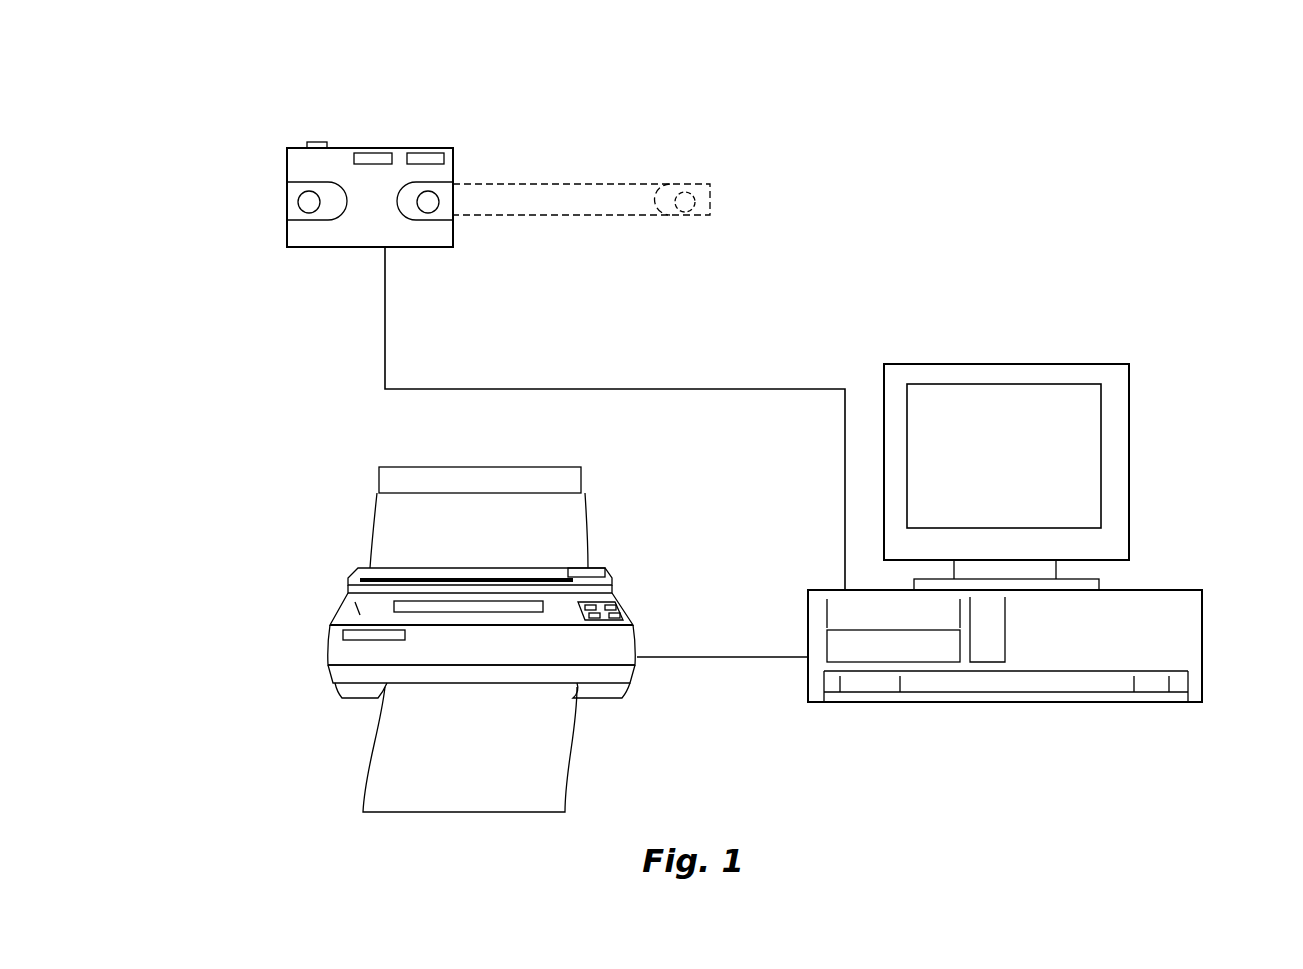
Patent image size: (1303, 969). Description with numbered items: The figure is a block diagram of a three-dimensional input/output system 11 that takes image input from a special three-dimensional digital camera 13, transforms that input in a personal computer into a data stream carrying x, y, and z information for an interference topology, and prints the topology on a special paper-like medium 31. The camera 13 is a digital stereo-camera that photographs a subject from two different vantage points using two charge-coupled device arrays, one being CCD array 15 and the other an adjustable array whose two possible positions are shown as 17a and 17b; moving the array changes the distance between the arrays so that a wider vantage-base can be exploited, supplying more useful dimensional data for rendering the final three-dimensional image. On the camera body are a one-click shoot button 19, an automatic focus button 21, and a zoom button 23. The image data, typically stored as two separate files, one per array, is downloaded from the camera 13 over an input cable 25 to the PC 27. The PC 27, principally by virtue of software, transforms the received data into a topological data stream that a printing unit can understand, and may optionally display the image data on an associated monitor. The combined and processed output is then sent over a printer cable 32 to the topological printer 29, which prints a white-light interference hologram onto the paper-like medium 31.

The 3-D input/output system 11 is at (875, 129).
The 3-D digital camera 13 is at (468, 129).
The CCD array 15 is at (297, 203).
The CCD array position 17a is at (440, 200).
The CCD array position 17b is at (697, 202).
The one-click shoot button 19 is at (317, 142).
The automatic focus button 21 is at (393, 162).
The zoom button 23 is at (450, 159).
The input cable 25 is at (572, 388).
The PC 27 is at (1129, 460).
The topological printer 29 is at (353, 578).
The paper-like medium 31 is at (360, 793).
The printer cable 32 is at (742, 657).